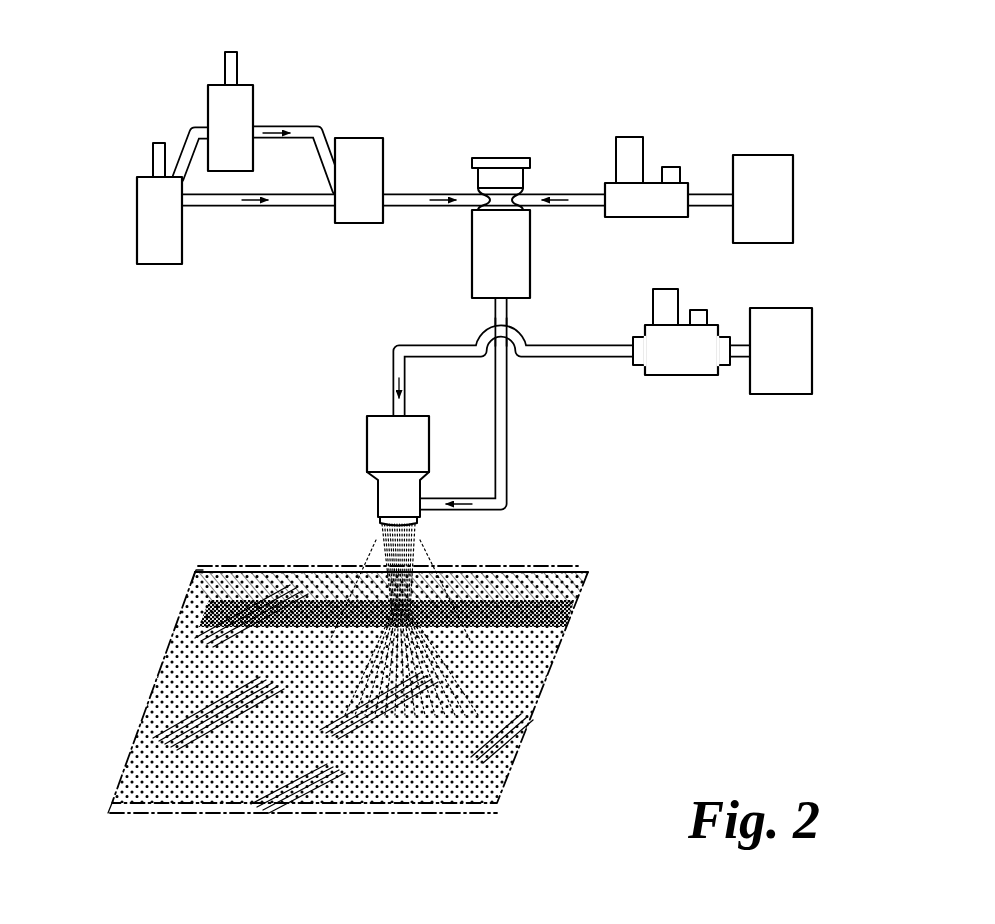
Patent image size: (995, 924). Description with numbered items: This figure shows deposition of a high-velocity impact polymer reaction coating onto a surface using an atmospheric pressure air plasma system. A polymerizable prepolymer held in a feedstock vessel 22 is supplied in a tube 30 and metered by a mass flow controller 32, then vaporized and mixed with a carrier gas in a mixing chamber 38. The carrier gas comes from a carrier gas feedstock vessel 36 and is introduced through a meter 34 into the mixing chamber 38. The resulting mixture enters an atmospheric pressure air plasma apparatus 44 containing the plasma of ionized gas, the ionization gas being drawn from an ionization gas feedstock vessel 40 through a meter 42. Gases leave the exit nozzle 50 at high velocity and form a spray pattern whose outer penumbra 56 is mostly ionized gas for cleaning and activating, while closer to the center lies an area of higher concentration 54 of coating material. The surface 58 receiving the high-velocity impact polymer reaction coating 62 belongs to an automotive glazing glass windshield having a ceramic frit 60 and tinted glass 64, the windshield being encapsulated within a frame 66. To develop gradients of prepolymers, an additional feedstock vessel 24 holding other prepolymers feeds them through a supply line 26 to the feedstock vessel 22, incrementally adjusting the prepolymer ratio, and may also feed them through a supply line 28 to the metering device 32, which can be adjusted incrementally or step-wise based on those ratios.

The feedstock vessel 22 is at (159, 244).
The additional feedstock vessel 24 is at (238, 118).
The supply line 26 is at (176, 140).
The supply line 28 is at (321, 130).
The tube 30 is at (306, 206).
The mass flow controller 32 is at (358, 207).
The meter 34 is at (656, 148).
The carrier gas feedstock vessel 36 is at (765, 181).
The mixing chamber 38 is at (502, 174).
The ionization gas feedstock vessel 40 is at (778, 329).
The meter 42 is at (688, 298).
The atmospheric pressure air plasma apparatus 44 is at (378, 473).
The exit nozzle 50 is at (421, 521).
The area of higher concentration 54 is at (525, 607).
The outer penumbra 56 is at (460, 676).
The surface 58 is at (437, 787).
The ceramic frit 60 is at (218, 586).
The high-velocity impact polymer reaction coating 62 is at (470, 632).
The tinted glass 64 is at (203, 612).
The frame 66 is at (548, 560).